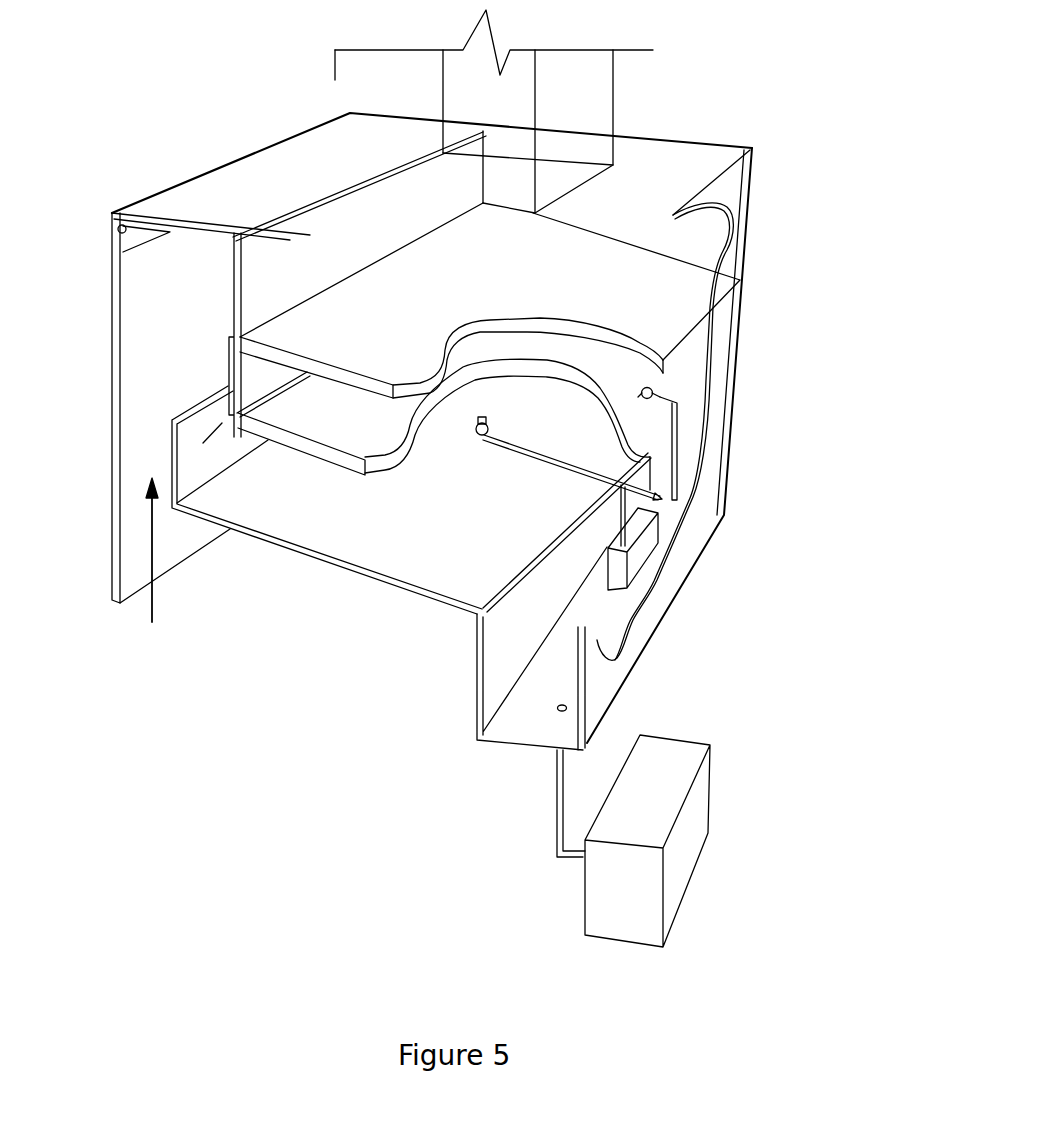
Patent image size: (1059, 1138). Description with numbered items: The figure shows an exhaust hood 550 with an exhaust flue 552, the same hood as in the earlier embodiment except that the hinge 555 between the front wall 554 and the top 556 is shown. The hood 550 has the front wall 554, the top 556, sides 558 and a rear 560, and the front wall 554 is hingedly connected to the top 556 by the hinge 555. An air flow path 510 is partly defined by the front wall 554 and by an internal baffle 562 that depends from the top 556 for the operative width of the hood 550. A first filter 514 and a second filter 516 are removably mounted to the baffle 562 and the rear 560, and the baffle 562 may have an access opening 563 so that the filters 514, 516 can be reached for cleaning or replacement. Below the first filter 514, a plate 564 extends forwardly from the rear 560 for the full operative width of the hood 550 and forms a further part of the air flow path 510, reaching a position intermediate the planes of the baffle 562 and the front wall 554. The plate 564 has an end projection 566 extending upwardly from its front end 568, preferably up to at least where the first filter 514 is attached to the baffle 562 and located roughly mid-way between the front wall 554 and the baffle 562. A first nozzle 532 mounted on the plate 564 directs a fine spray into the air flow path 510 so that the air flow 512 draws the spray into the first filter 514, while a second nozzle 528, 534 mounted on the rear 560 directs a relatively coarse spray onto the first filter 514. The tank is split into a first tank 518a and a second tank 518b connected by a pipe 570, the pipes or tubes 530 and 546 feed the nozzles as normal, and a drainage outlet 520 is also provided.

The air flow path 510 is at (147, 438).
The air flow 512 is at (147, 567).
The first filter 514 is at (665, 385).
The second filter 516 is at (672, 330).
The first tank 518a is at (562, 662).
The second tank 518b is at (685, 848).
The drainage outlet 520 is at (578, 553).
The second nozzle 528 is at (647, 550).
The pipe/tube 530 is at (620, 477).
The first nozzle 532 is at (479, 440).
The second nozzle 534 is at (660, 392).
The pipe/tube 546 is at (680, 462).
The exhaust hood 550 is at (718, 130).
The exhaust flue 552 is at (548, 110).
The front wall 554 is at (110, 489).
The hinge 555 is at (112, 248).
The top 556 is at (320, 150).
The sides 558 is at (660, 183).
The rear 560 is at (727, 232).
The internal baffle 562 is at (290, 238).
The access opening 563 is at (228, 367).
The plate 564 is at (348, 550).
The end projection 566 is at (205, 435).
The front end 568 is at (237, 513).
The pipe 570 is at (557, 810).